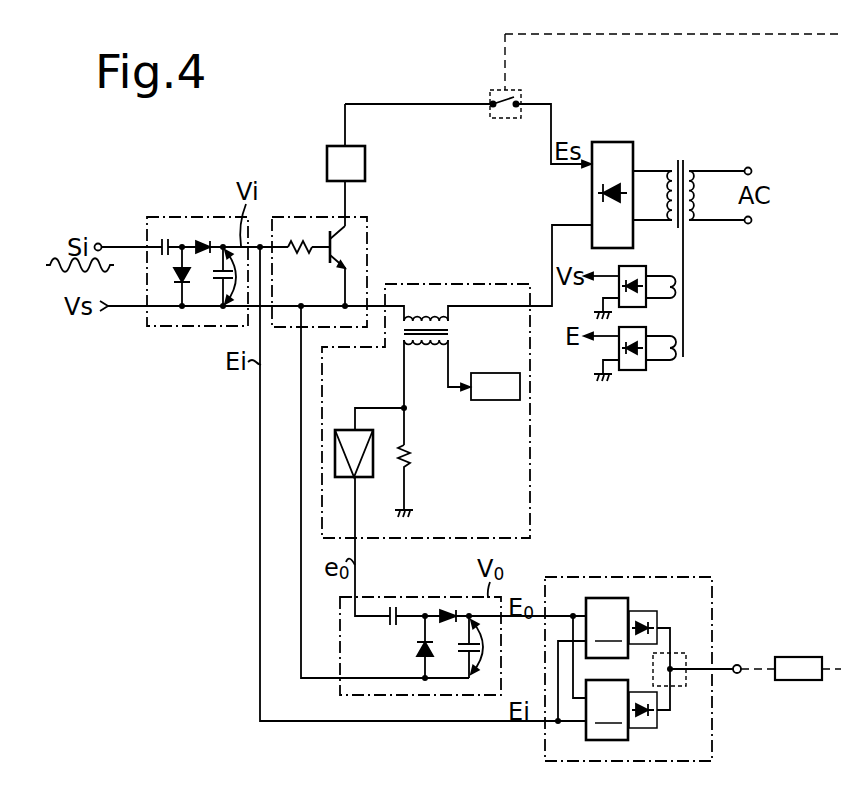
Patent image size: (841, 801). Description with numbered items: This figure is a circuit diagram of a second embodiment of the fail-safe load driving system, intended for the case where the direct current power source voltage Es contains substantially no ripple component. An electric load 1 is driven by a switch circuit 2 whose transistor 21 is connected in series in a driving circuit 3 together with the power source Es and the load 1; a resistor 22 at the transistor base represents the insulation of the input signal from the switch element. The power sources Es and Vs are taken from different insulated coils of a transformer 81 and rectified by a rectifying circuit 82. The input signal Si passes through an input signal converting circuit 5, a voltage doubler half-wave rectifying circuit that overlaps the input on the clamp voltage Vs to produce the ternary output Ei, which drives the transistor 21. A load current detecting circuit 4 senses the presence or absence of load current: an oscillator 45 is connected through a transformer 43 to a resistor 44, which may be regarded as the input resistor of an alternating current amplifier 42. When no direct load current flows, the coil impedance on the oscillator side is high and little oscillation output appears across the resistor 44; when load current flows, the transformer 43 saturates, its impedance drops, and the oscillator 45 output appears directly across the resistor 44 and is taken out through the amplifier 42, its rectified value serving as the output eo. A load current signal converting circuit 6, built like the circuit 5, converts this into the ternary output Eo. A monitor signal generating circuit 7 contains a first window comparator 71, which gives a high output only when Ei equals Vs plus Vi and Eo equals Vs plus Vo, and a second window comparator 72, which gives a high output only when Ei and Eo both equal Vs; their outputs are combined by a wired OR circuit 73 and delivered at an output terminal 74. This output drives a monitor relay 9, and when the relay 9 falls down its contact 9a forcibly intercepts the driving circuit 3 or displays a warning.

The electric load 1 is at (366, 159).
The switch circuit 2 is at (319, 247).
The transistor 21 is at (331, 260).
The resistor 22 is at (294, 264).
The driving circuit 3 is at (437, 106).
The load current detecting circuit 4 is at (426, 385).
The alternating current amplifier 42 is at (345, 429).
The transformer 43 is at (451, 331).
The resistor 44 is at (406, 456).
The oscillator 45 is at (497, 401).
The input signal converting circuit 5 is at (199, 216).
The load current signal converting circuit 6 is at (418, 596).
The monitor signal generating circuit 7 is at (639, 652).
The first window comparator 71 is at (621, 628).
The second window comparator 72 is at (621, 710).
The wired OR circuit 73 is at (681, 652).
The output terminal 74 is at (740, 665).
The transformer 81 is at (681, 162).
The rectifying circuit 82 is at (608, 143).
The monitor relay 9 is at (806, 656).
The contact 9a is at (521, 94).